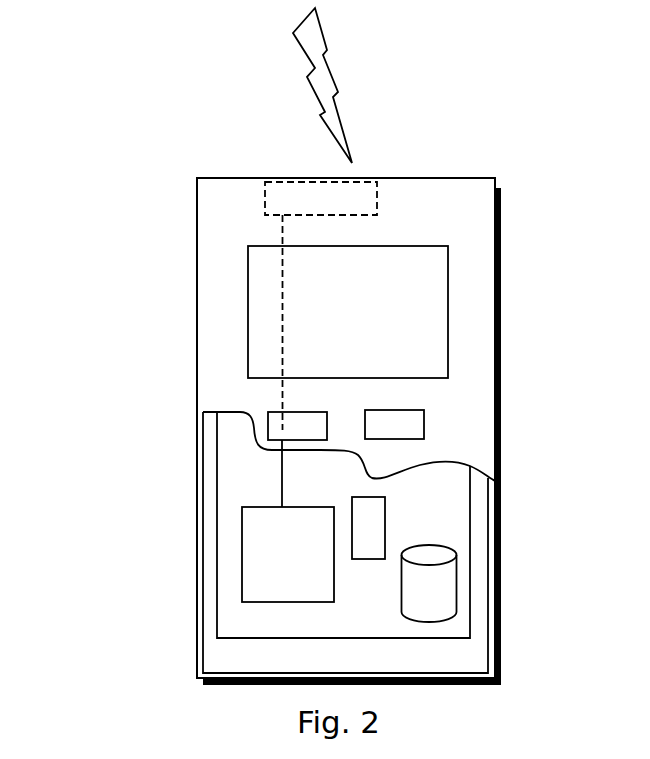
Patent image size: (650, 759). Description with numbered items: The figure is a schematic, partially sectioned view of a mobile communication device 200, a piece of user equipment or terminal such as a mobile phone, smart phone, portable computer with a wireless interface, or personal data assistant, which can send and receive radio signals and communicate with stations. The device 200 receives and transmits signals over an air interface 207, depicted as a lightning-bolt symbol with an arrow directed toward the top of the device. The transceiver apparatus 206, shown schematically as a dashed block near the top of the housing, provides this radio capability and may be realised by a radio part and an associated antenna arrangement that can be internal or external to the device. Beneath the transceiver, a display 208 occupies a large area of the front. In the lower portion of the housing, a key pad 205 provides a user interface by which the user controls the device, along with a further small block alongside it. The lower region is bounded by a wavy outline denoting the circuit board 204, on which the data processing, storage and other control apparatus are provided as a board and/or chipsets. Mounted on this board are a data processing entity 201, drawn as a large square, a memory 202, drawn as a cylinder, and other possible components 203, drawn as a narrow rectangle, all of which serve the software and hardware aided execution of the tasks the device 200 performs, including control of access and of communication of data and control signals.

The mobile communication device 200 is at (200, 221).
The data processing entity 201 is at (250, 539).
The memory 202 is at (423, 595).
The other possible components 203 is at (368, 512).
The circuit board 204 is at (242, 622).
The key pad 205 is at (270, 427).
The transceiver apparatus 206 is at (367, 193).
The air interface 207 is at (352, 113).
The display 208 is at (264, 300).